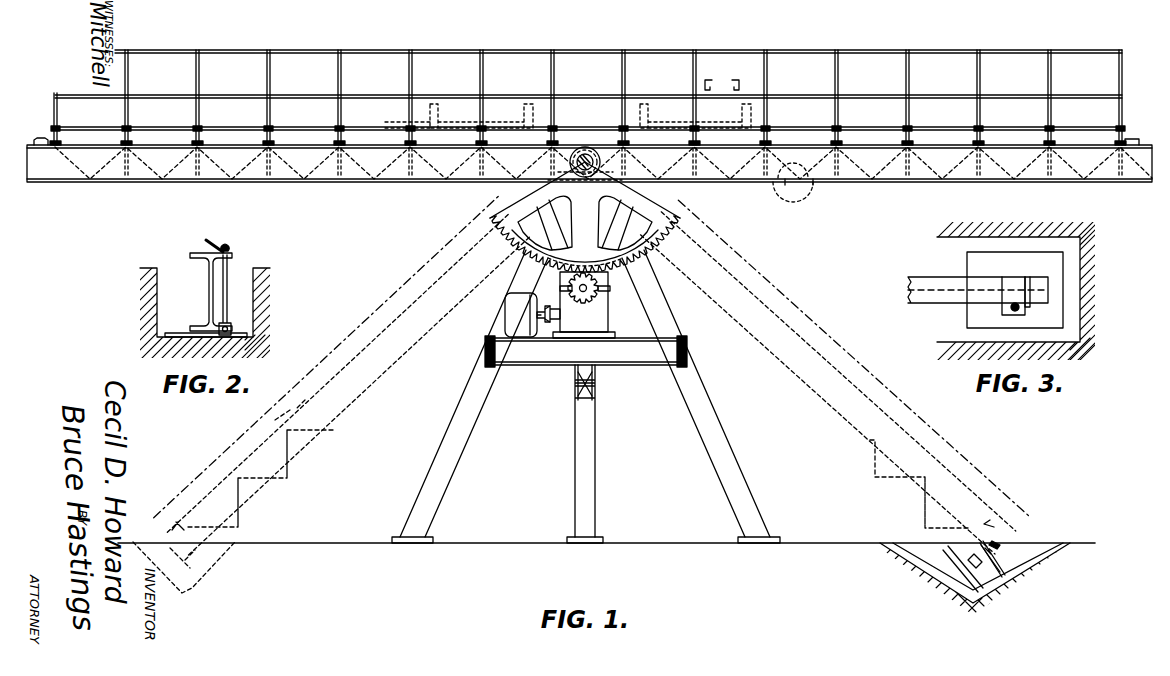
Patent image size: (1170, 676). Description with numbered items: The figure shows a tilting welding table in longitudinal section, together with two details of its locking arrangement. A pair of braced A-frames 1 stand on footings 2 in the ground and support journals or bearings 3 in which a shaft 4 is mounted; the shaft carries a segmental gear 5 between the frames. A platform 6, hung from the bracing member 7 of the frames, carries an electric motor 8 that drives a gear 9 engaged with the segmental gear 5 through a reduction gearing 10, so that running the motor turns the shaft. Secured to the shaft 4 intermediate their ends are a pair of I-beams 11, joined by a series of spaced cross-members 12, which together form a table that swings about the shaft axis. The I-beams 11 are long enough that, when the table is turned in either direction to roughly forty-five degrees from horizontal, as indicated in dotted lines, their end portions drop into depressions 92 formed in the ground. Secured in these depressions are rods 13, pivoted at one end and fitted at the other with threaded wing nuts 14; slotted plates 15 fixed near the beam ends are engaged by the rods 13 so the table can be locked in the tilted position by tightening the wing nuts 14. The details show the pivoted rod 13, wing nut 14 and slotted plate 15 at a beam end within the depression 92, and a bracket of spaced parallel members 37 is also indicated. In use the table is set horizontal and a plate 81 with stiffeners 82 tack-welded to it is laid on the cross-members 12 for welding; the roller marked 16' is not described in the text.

In FIG. 1, the A-frames 1 is at (458, 408).
In FIG. 1, the footings 2 is at (780, 537).
In FIG. 1, the journals or bearings 3 is at (1007, 522).
In FIG. 1, the shaft 4 is at (586, 147).
In FIG. 1, the segmental gear 5 is at (672, 234).
In FIG. 1, the platform 6 is at (628, 348).
In FIG. 1, the bracing member 7 is at (680, 351).
In FIG. 1, the electric motor 8 is at (507, 310).
In FIG. 1, the gear 9 is at (598, 296).
In FIG. 1, the reduction gearing 10 is at (561, 300).
In FIG. 1, the I-beams 11 is at (54, 172).
In FIG. 2, the I-beams 11 is at (202, 287).
In FIG. 3, the I-beams 11 is at (943, 282).
In FIG. 1, the cross-members 12 is at (975, 127).
In FIG. 1, the rods 13 is at (997, 560).
In FIG. 2, the rods 13 is at (229, 270).
In FIG. 3, the rods 13 is at (1013, 311).
In FIG. 1, the wing nuts 14 is at (1000, 544).
In FIG. 2, the wing nuts 14 is at (213, 240).
In FIG. 1, the slotted plates 15 is at (40, 140).
In FIG. 3, the slotted plates 15 is at (1028, 310).
In FIG. 1, the roller 16' is at (793, 188).
In FIG. 1, the spaced parallel members 37 is at (722, 75).
In FIG. 1, the plate 81 is at (395, 125).
In FIG. 1, the stiffeners 82 is at (525, 104).
In FIG. 1, the depressions 92 is at (1015, 553).
In FIG. 2, the depressions 92 is at (250, 306).
In FIG. 3, the depressions 92 is at (1048, 338).